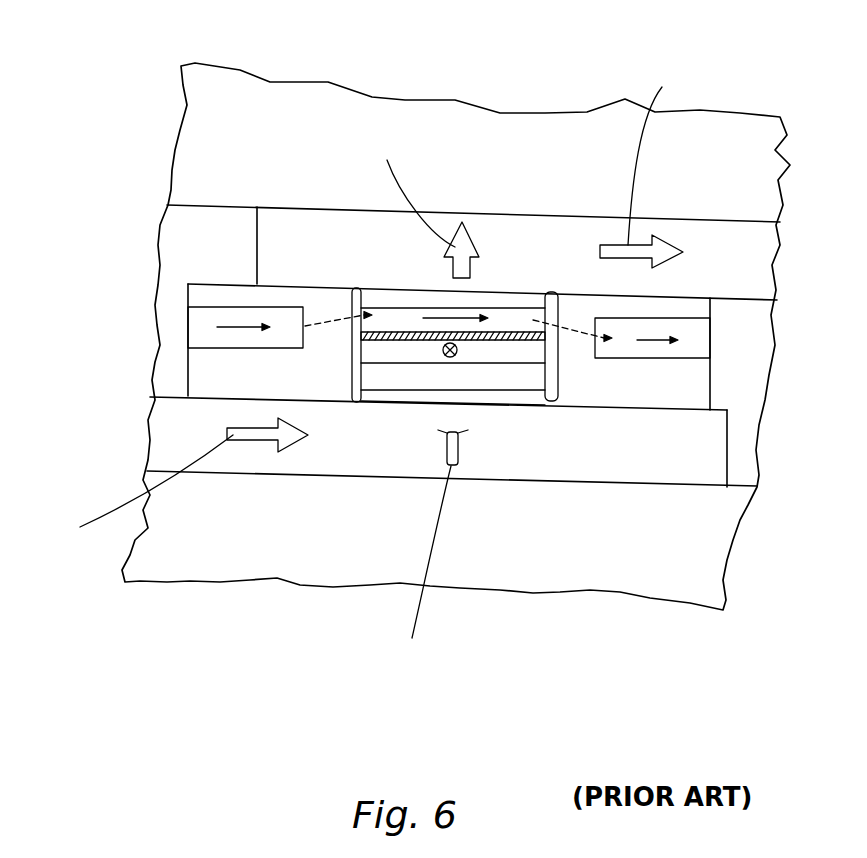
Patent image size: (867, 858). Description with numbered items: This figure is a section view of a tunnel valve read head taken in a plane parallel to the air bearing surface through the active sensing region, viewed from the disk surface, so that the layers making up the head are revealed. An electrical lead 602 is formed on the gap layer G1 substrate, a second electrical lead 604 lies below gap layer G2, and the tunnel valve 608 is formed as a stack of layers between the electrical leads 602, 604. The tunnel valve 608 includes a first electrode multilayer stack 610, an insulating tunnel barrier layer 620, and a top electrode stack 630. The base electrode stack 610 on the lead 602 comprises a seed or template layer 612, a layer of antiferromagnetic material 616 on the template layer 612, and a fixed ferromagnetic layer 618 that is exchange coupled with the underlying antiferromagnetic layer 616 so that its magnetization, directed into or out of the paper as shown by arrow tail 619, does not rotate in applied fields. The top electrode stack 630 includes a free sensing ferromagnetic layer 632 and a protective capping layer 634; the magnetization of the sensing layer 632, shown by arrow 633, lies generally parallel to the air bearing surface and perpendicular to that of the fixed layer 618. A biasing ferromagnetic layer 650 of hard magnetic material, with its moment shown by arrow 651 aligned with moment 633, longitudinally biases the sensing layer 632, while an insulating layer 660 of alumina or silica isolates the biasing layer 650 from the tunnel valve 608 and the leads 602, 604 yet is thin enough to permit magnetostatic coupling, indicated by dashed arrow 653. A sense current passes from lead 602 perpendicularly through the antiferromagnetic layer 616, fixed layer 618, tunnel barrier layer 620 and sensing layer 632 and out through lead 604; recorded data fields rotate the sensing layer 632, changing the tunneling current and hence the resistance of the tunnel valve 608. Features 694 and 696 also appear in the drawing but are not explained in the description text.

The electrical lead 602 is at (723, 463).
The electrical lead 604 is at (763, 262).
The tunnel valve 608 is at (570, 348).
The first electrode multilayer stack 610 is at (345, 363).
The template layer 612 is at (525, 402).
The antiferromagnetic layer 616 is at (492, 382).
The fixed ferromagnetic layer 618 is at (408, 352).
The arrow tail 619 is at (447, 358).
The insulating tunnel barrier layer 620 is at (350, 331).
The top electrode stack 630 is at (342, 300).
The sensing ferromagnetic layer 632 is at (502, 317).
The arrow 633 is at (440, 317).
The capping layer 634 is at (522, 302).
The biasing ferromagnetic layer 650 is at (217, 327).
The arrow 651 is at (253, 326).
The dashed arrow 653 is at (300, 307).
The insulating layer 660 is at (220, 383).
The left sealing member 694 is at (347, 303).
The right sealing member 696 is at (560, 314).
The gap layer G1 is at (723, 508).
The gap layer G2 is at (762, 152).